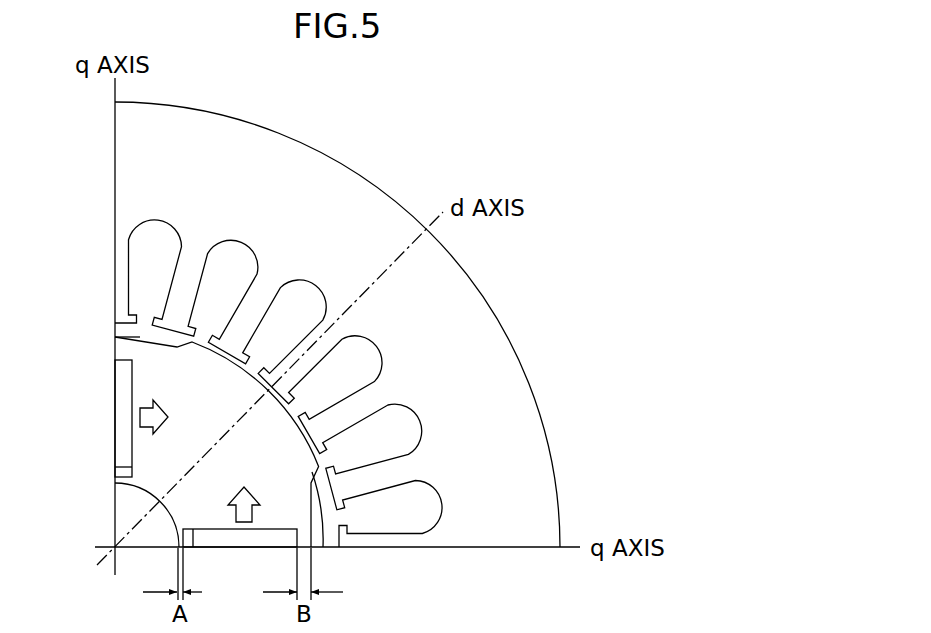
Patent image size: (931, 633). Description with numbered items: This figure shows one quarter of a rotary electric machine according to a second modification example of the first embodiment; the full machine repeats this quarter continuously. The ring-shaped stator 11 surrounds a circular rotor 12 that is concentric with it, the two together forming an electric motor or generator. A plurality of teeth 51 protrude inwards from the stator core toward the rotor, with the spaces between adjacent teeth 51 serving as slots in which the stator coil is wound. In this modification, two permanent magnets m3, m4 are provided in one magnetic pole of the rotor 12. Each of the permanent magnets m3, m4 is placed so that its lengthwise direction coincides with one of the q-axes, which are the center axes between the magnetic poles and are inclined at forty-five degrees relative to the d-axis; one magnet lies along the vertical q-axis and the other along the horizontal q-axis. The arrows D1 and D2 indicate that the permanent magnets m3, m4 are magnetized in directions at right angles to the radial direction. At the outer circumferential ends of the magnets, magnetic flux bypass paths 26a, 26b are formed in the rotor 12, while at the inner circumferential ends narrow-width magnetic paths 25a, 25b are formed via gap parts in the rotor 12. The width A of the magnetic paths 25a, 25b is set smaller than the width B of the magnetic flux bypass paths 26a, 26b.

The stator 11 is at (543, 283).
The teeth 51 is at (185, 283).
The rotor 12 is at (160, 443).
The magnetic flux bypass path 26a is at (127, 354).
The permanent magnet m3 is at (123, 407).
The narrow-width magnetic path 25a is at (127, 486).
The narrow-width magnetic path 25b is at (170, 537).
The permanent magnet m4 is at (240, 538).
The magnetic flux bypass path 26b is at (306, 540).
The arrow indicating magnetization direction D1 is at (165, 405).
The arrow indicating magnetization direction D2 is at (258, 486).